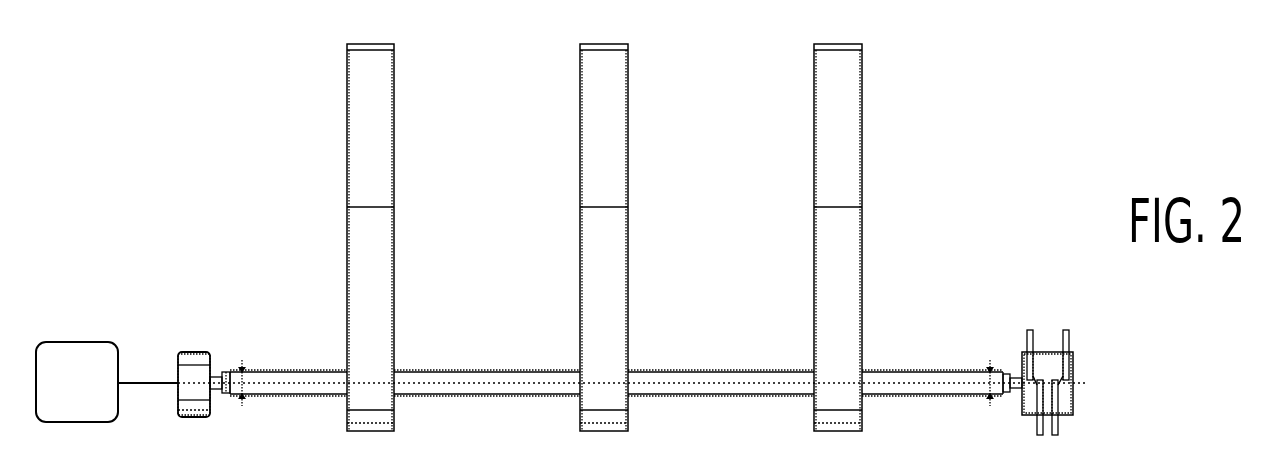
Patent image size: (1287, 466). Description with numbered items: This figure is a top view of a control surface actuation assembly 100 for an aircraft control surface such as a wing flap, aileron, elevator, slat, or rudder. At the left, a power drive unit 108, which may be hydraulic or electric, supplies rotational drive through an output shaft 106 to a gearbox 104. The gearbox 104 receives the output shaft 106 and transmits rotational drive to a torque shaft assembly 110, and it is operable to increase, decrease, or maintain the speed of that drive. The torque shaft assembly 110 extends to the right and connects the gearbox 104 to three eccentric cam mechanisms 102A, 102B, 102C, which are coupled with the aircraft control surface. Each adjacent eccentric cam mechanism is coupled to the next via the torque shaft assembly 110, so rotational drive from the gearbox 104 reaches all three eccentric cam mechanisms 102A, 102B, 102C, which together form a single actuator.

The control surface actuation assembly 100 is at (250, 180).
The eccentric cam mechanism 102A is at (382, 152).
The eccentric cam mechanism 102B is at (617, 152).
The eccentric cam mechanism 102C is at (850, 152).
The gearbox 104 is at (202, 370).
The output shaft 106 is at (143, 382).
The power drive unit 108 is at (80, 363).
The torque shaft assembly 110 is at (489, 371).